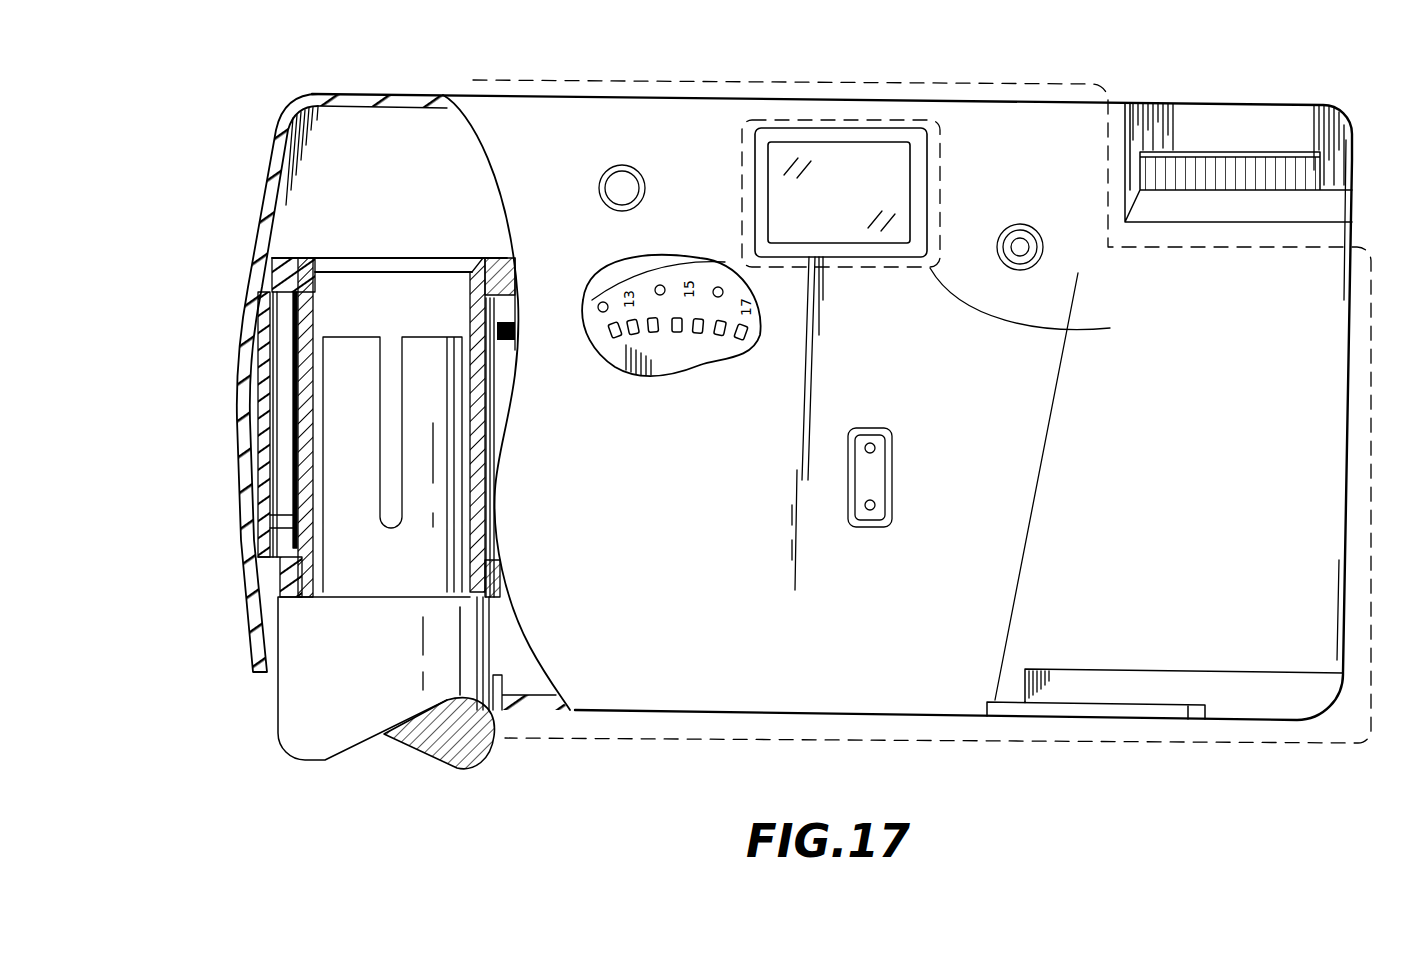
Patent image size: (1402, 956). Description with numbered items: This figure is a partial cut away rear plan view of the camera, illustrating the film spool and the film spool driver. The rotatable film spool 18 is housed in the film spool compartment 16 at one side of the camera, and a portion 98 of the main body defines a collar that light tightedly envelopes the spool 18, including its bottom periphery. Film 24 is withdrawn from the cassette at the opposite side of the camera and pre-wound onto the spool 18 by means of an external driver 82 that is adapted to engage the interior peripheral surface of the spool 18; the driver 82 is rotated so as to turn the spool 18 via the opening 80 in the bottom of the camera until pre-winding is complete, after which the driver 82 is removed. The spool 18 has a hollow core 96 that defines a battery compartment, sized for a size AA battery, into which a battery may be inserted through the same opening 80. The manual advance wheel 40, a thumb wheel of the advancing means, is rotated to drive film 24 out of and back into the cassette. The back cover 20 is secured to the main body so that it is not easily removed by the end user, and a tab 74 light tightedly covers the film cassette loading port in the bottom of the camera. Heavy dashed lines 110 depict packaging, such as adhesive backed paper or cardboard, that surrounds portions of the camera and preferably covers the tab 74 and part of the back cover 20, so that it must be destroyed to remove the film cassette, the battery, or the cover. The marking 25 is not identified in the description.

The film spool compartment 16 is at (283, 218).
The collar portion 98 is at (268, 277).
The film 24 is at (294, 388).
The film spool 18 is at (288, 467).
The hollow core 96 is at (372, 298).
The back cover 20 is at (1005, 140).
The manual advance wheel 40 is at (1233, 177).
The heavy dashed lines 110 is at (1125, 247).
The indicator plate 25 is at (870, 477).
The tab 74 is at (1253, 700).
The external driver 82 is at (326, 728).
The opening 80 is at (497, 722).